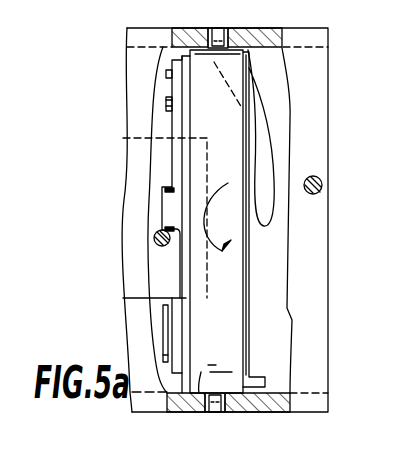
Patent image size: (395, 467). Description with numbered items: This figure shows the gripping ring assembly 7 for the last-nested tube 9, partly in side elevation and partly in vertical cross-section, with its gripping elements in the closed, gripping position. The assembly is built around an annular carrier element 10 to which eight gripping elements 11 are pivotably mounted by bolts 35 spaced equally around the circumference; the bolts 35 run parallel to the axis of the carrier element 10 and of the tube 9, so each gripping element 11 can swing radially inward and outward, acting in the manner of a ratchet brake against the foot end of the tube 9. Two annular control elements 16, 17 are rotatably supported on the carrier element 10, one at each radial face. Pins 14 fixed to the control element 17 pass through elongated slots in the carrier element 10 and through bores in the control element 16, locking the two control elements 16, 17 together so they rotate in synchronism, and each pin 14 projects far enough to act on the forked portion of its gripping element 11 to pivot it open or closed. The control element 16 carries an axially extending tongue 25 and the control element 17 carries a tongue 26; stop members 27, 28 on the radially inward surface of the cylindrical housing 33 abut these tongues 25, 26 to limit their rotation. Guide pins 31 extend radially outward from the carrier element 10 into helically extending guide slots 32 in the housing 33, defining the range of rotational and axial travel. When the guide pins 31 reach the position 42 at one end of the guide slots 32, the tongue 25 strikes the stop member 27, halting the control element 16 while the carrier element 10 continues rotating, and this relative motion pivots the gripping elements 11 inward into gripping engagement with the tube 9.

The gripping ring assembly 7 is at (185, 27).
The last-nested tube 9 is at (158, 282).
The annular carrier element 10 is at (201, 373).
The gripping element 11 is at (178, 118).
The pin 14 is at (167, 73).
The annular control element 16 is at (183, 347).
The annular control element 17 is at (283, 48).
The tongue 25 is at (162, 204).
The tongue 26 is at (265, 382).
The stop member 27 is at (157, 246).
The stop member 28 is at (322, 185).
The guide pin 31 is at (230, 29).
The helically extending guide slot 32 is at (257, 138).
The cylindrical housing 33 is at (290, 398).
The bolt 35 is at (172, 104).
The position 42 is at (238, 17).